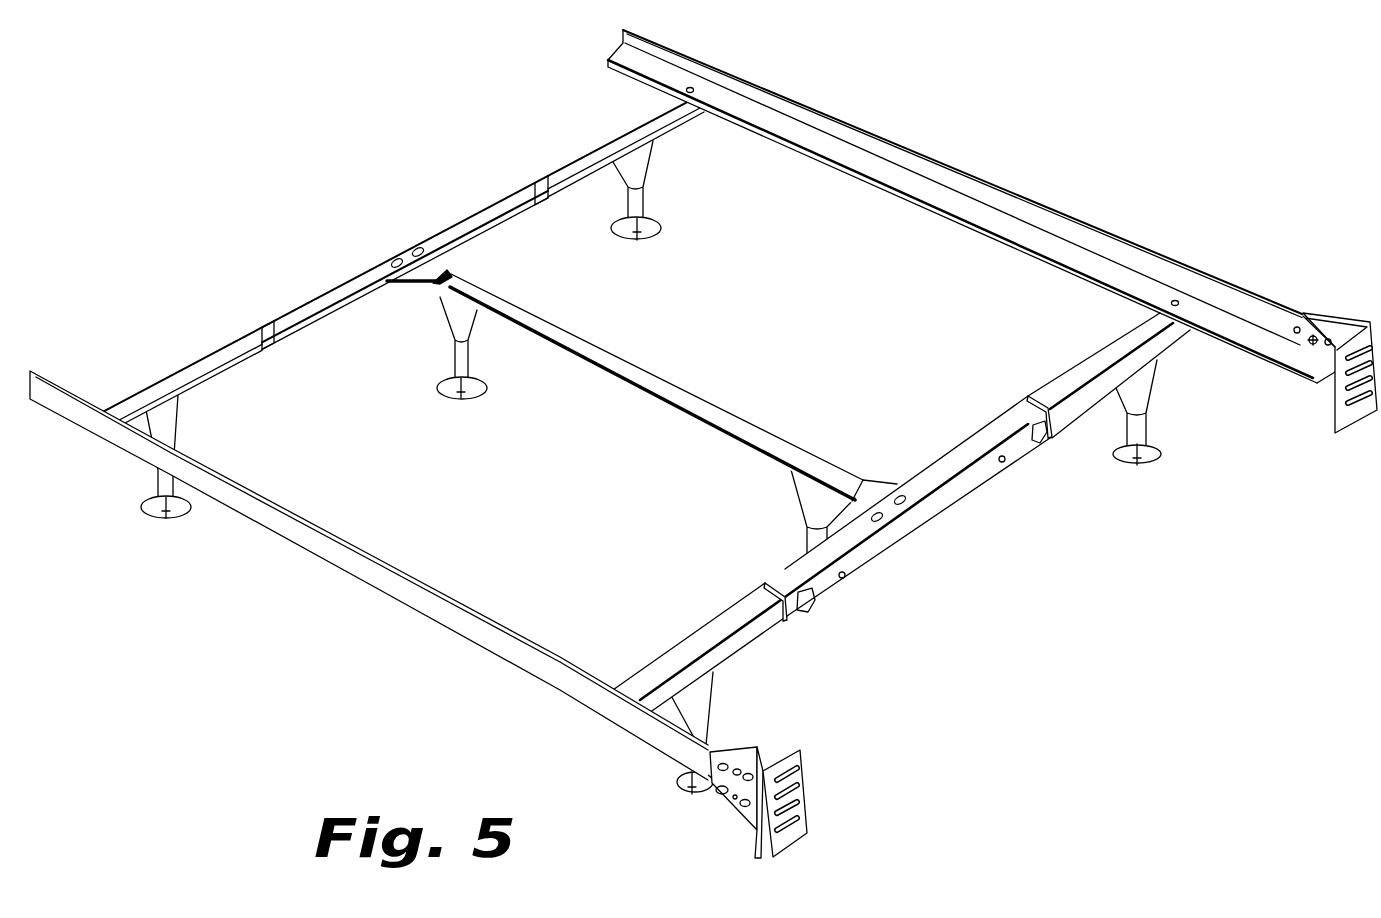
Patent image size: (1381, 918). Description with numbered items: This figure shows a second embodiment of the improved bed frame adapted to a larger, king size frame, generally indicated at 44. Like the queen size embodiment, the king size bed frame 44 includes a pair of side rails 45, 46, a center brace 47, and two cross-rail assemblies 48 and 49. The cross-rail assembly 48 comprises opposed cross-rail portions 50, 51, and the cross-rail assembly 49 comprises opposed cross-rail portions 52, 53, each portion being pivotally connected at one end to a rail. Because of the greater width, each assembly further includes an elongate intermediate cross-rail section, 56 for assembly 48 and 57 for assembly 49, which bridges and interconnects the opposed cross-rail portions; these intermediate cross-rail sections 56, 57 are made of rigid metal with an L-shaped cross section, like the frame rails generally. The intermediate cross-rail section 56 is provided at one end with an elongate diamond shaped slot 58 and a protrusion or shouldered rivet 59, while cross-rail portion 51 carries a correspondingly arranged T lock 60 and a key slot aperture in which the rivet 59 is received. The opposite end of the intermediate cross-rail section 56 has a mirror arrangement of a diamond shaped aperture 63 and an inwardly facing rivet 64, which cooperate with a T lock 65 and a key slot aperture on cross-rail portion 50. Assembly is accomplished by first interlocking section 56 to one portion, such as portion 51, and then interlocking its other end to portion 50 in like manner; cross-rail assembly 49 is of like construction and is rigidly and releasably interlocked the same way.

The king size bed frame 44 is at (703, 444).
The rail 45 is at (436, 590).
The rail 46 is at (1004, 186).
The center brace 47 is at (705, 392).
The cross-rail assembly 48 is at (895, 513).
The cross-rail assembly 49 is at (401, 263).
The cross-rail portion 50 is at (683, 655).
The cross-rail portion 51 is at (1090, 368).
The cross-rail portion 52 is at (185, 375).
The cross-rail portion 53 is at (593, 142).
The intermediate cross-rail section 56 is at (940, 518).
The intermediate cross-rail section 57 is at (362, 270).
The diamond shaped slot 58 is at (1047, 421).
The shouldered rivet 59 is at (1002, 462).
The T lock 60 is at (1038, 445).
The diamond shaped aperture 63 is at (803, 613).
The inwardly facing rivet 64 is at (842, 576).
The T lock 65 is at (812, 606).